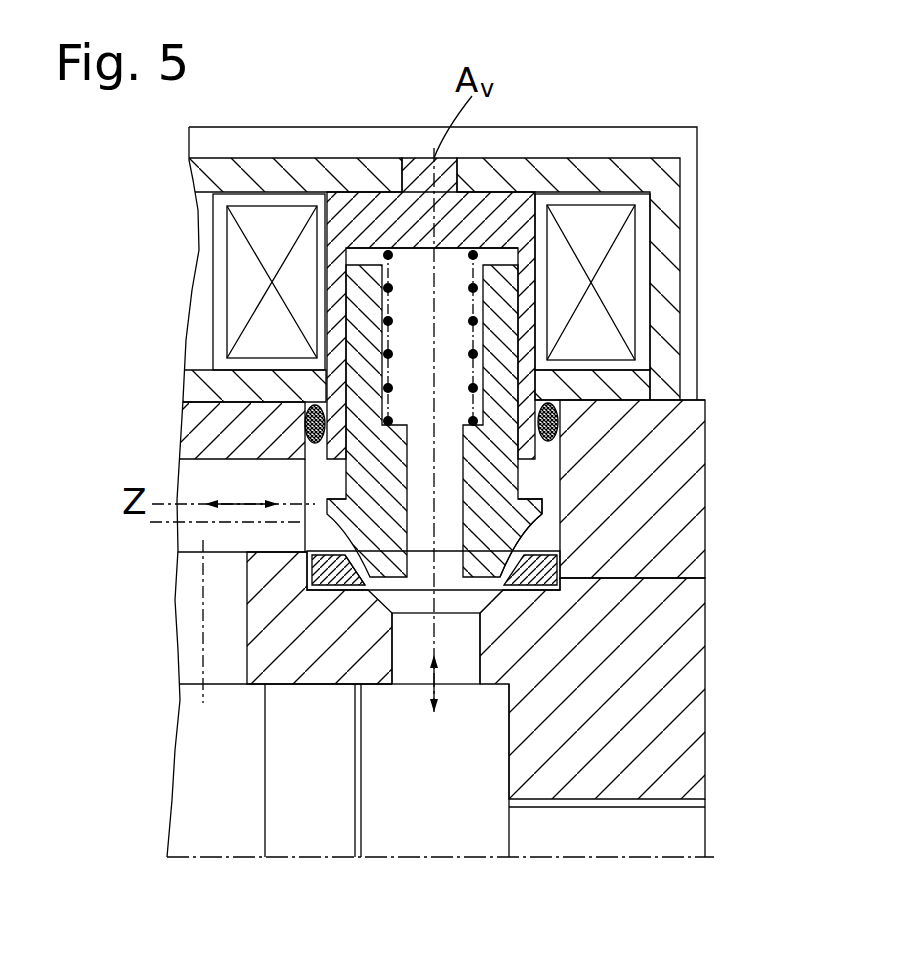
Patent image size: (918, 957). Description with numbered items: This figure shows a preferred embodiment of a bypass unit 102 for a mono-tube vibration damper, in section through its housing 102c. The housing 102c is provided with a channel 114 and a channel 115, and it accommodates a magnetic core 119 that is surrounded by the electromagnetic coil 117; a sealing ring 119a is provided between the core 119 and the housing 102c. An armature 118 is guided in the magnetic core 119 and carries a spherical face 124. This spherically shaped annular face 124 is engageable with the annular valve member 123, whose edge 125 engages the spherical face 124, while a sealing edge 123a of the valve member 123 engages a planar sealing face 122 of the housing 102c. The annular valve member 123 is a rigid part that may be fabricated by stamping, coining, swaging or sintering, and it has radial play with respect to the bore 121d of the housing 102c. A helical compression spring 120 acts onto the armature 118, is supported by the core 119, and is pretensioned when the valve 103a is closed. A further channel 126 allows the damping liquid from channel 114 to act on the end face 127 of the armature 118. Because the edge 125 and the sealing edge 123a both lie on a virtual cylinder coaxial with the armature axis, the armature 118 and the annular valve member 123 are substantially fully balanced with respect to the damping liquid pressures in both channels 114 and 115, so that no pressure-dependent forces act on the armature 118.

The bypass unit 102 is at (722, 104).
The housing 102c is at (645, 694).
The valve 103a is at (412, 608).
The channel 114 is at (437, 823).
The channel 115 is at (187, 657).
The electromagnetic coil 117 is at (617, 272).
The armature 118 is at (563, 440).
The magnetic core 119 is at (483, 208).
The sealing ring 119a is at (560, 397).
The helical compression spring 120 is at (478, 322).
The bore 121d is at (560, 572).
The planar sealing face 122 is at (547, 595).
The annular valve member 123 is at (537, 533).
The sealing edge 123a is at (345, 597).
The spherical face 124 is at (543, 500).
The edge 125 is at (340, 547).
The channel 126 is at (424, 470).
The end face 127 is at (347, 252).